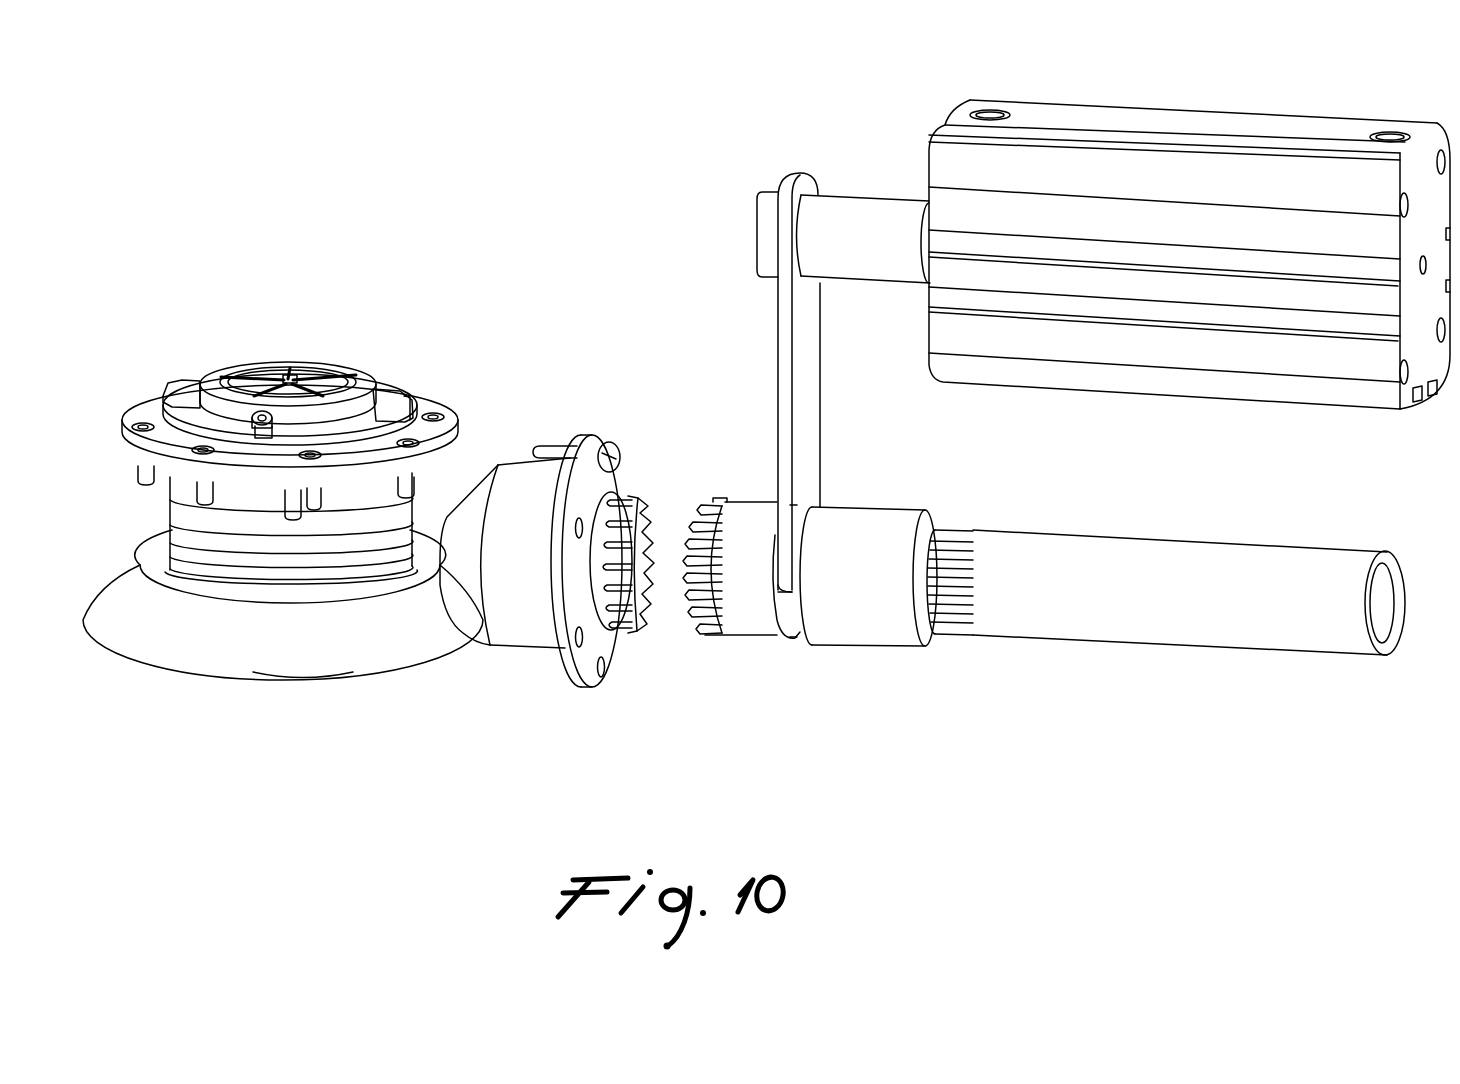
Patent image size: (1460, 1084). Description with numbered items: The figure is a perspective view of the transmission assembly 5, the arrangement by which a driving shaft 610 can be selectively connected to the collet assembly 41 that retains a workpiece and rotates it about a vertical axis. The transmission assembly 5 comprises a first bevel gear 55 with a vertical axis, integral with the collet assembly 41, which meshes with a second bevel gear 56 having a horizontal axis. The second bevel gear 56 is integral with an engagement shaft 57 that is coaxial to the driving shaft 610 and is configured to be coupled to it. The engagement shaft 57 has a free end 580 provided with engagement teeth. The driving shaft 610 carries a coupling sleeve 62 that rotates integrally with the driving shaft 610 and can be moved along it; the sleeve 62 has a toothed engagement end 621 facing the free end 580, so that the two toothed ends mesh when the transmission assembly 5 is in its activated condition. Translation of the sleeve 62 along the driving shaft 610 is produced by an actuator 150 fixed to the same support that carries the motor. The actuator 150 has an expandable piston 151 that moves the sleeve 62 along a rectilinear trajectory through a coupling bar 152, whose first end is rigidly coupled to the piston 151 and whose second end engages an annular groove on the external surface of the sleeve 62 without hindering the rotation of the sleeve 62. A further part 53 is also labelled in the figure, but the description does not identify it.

The transmission assembly 5 is at (560, 497).
The collet assembly 41 is at (388, 384).
The clamp 53 is at (790, 615).
The first bevel gear 55 is at (223, 627).
The second bevel gear 56 is at (468, 513).
The engagement shaft 57 is at (598, 578).
The coupling sleeve 62 is at (721, 558).
The actuator 150 is at (1273, 230).
The expandable piston 151 is at (853, 243).
The coupling bar 152 is at (803, 432).
The free end 580 is at (660, 526).
The driving shaft 610 is at (1184, 597).
The toothed engagement end 621 is at (688, 578).